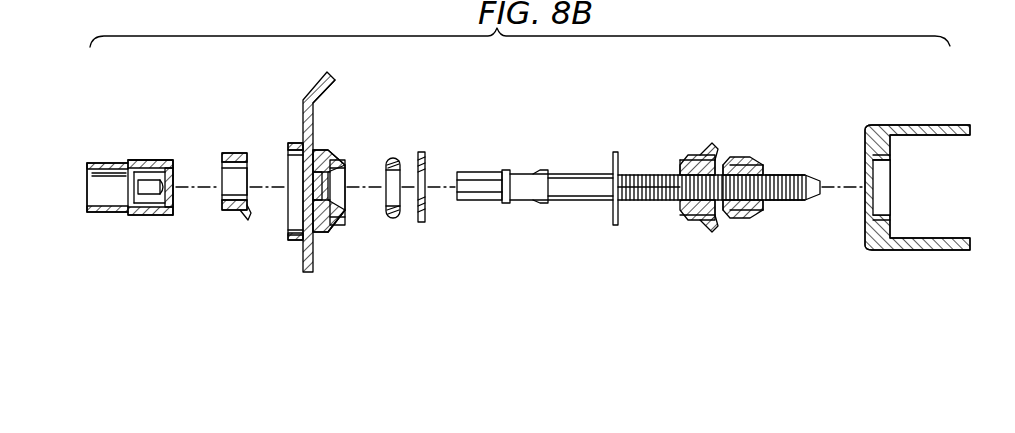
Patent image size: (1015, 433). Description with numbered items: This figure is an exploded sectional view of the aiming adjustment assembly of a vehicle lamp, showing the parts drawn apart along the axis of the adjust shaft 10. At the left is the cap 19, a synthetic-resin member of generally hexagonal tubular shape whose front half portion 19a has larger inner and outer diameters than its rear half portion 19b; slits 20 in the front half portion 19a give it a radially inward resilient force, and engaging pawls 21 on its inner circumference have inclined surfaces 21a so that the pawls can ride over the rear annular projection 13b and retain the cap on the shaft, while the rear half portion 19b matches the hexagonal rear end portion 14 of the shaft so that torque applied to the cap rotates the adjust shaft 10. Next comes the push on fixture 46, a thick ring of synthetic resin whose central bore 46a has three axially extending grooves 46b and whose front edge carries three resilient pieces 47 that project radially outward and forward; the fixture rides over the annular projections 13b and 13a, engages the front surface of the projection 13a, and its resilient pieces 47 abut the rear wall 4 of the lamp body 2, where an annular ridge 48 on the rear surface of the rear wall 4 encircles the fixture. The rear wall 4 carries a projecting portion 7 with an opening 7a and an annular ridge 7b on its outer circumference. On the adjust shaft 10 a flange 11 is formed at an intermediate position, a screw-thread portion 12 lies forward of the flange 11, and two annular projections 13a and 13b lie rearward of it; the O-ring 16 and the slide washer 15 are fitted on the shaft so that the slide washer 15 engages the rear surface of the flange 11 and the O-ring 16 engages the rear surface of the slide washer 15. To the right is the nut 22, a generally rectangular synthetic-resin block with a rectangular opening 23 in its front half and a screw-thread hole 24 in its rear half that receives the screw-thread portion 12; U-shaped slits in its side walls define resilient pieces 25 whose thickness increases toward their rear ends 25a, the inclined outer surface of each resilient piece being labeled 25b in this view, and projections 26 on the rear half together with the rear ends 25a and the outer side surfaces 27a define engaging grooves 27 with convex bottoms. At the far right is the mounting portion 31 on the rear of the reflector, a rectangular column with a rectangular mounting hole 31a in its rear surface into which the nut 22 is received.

The lamp body 2 is at (312, 88).
The rear wall 4 is at (330, 96).
The projecting portion 7 is at (330, 152).
The opening 7a is at (345, 168).
The annular ridge 7b is at (338, 228).
The adjust shaft 10 is at (648, 200).
The flange 11 is at (615, 152).
The screw-thread portion 12 is at (660, 175).
The annular projection 13a is at (545, 170).
The annular projection 13b is at (506, 170).
The rear end portion 14 is at (484, 172).
The slide washer 15 is at (421, 152).
The O-ring 16 is at (393, 158).
The cap 19 is at (112, 160).
The front half portion 19a is at (142, 160).
The rear half portion 19b is at (95, 160).
The slit 20 is at (136, 204).
The engaging pawl 21 is at (150, 196).
The inclined surface 21a is at (170, 196).
The nut 22 is at (688, 158).
The rectangular opening 23 is at (775, 175).
The screw-thread hole 24 is at (682, 168).
The resilient piece 25 is at (752, 157).
The rear end 25a is at (728, 160).
The nut outer face 25b is at (765, 165).
The projection 26 is at (698, 155).
The engaging groove 27 is at (710, 145).
The outer side surface 27a is at (716, 160).
The mounting portion 31 is at (918, 125).
The mounting hole 31a is at (872, 158).
The push on fixture 46 is at (236, 153).
The central bore 46a is at (247, 195).
The axially extending groove 46b is at (222, 162).
The resilient piece 47 is at (246, 220).
The annular ridge 48 is at (290, 240).